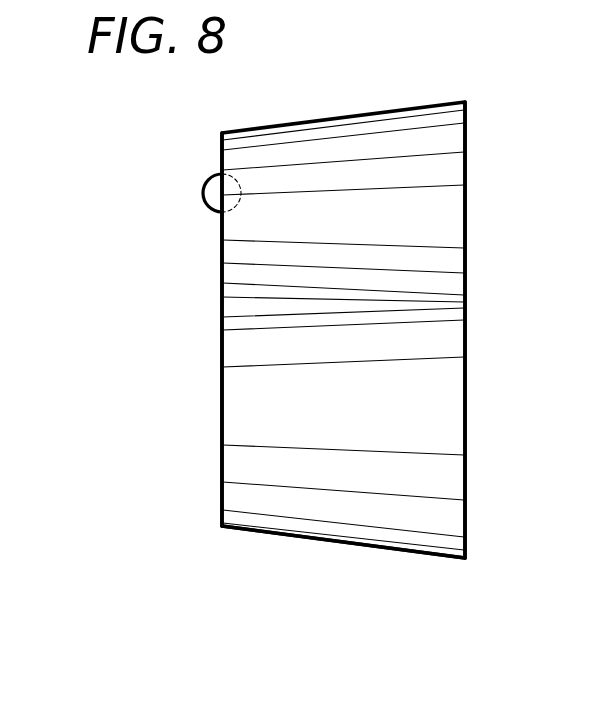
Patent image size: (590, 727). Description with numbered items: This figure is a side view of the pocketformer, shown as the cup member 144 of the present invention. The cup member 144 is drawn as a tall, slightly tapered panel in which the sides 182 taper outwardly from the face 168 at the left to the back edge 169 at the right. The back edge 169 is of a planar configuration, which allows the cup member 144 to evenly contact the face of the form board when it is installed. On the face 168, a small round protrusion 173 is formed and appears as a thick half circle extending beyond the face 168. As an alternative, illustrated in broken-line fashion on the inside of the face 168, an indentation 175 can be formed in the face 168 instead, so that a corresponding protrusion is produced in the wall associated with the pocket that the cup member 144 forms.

The cup member 144 is at (292, 537).
The face 168 is at (220, 485).
The back edge 169 is at (467, 442).
The protrusion 173 is at (208, 181).
The indentation 175 is at (242, 193).
The sides 182 is at (428, 555).